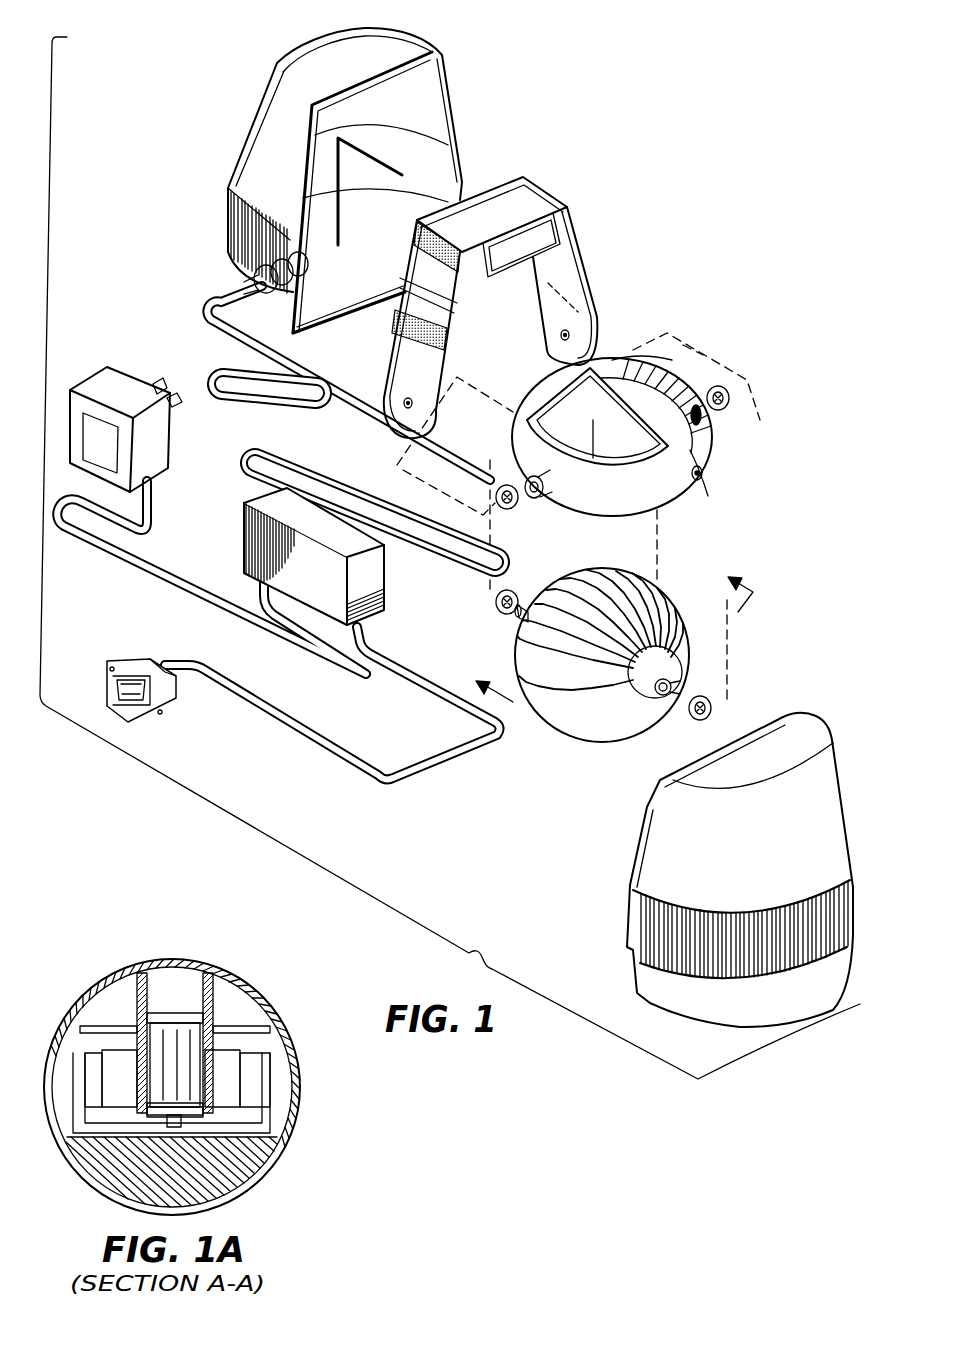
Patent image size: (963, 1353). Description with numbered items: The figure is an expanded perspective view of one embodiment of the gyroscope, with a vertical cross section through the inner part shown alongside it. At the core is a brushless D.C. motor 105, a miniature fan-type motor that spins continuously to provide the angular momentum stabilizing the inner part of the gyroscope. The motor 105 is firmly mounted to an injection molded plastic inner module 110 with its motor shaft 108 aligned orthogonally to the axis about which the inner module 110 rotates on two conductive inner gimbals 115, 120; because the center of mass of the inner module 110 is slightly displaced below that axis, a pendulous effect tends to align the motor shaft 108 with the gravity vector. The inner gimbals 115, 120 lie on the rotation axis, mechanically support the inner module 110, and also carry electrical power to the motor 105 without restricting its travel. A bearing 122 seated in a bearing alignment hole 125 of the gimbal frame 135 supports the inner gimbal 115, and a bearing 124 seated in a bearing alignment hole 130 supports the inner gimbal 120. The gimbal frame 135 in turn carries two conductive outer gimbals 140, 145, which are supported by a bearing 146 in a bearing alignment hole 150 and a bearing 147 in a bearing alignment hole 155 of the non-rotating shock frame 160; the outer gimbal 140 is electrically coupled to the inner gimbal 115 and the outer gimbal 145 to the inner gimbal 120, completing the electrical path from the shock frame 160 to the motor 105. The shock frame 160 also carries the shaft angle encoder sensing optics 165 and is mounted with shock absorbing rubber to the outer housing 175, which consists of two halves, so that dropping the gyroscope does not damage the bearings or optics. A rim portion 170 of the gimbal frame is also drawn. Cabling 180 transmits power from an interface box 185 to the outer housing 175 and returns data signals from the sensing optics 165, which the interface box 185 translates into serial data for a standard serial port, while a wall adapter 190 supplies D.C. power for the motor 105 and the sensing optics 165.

In FIG. 1A, the brushless D.C. motor 105 is at (232, 1090).
In FIG. 1A, the motor shaft 108 is at (146, 1018).
In FIG. 1, the inner module 110 is at (573, 728).
In FIG. 1A, the inner module 110 is at (300, 1058).
In FIG. 1, the inner gimbal 115 is at (528, 598).
In FIG. 1, the inner gimbal 120 is at (667, 712).
In FIG. 1, the bearing 122 is at (493, 608).
In FIG. 1, the bearing 124 is at (715, 700).
In FIG. 1, the bearing alignment hole 125 is at (545, 402).
In FIG. 1, the bearing alignment hole 130 is at (706, 497).
In FIG. 1, the gimbal frame 135 is at (722, 480).
In FIG. 1, the outer gimbal 140 is at (540, 497).
In FIG. 1, the outer gimbal 145 is at (705, 415).
In FIG. 1, the bearing 146 is at (500, 495).
In FIG. 1, the bearing 147 is at (736, 398).
In FIG. 1, the bearing alignment hole 150 is at (405, 404).
In FIG. 1, the bearing alignment hole 155 is at (572, 335).
In FIG. 1, the shock frame 160 is at (548, 190).
In FIG. 1, the shaft angle encoder sensing optics 165 is at (575, 240).
In FIG. 1, the rim 170 is at (690, 348).
In FIG. 1, the outer housing 175 is at (256, 128).
In FIG. 1, the cabling 180 is at (135, 722).
In FIG. 1, the interface box 185 is at (243, 532).
In FIG. 1, the wall adapter 190 is at (118, 375).